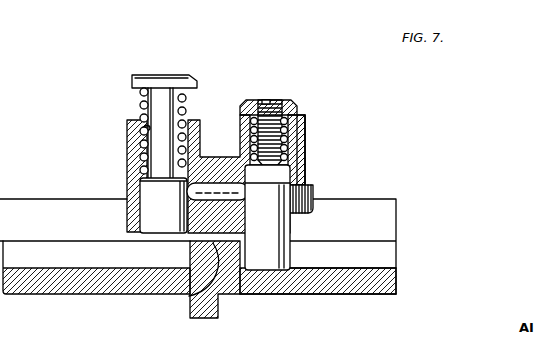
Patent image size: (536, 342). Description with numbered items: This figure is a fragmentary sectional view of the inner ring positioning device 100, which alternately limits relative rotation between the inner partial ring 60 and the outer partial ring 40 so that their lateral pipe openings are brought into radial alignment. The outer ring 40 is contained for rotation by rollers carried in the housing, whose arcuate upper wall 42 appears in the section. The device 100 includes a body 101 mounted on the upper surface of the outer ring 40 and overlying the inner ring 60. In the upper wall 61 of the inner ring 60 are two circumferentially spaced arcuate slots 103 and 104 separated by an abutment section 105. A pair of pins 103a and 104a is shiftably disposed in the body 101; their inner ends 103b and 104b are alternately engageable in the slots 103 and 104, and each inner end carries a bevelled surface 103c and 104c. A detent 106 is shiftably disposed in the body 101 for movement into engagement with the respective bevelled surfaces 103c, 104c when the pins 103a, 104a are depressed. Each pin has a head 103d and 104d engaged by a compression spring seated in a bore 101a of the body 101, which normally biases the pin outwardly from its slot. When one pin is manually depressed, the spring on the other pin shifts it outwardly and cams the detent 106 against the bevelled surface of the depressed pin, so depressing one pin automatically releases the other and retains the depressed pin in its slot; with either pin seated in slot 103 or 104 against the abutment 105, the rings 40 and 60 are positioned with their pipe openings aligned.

The outer partial ring 40 is at (35, 197).
The upper wall 42 is at (376, 200).
The inner partial ring 60 is at (358, 292).
The upper wall 61 is at (384, 281).
The inner ring positioning device 100 is at (309, 151).
The body 101 is at (210, 156).
The bores 101a is at (135, 126).
The arcuate slot 103 is at (381, 266).
The pin 103a is at (258, 246).
The inner end 103b is at (286, 126).
The bevelled surface 103c is at (296, 196).
The head 103d is at (266, 105).
The arcuate slot 104 is at (66, 269).
The pin 104a is at (143, 219).
The inner end 104b is at (140, 106).
The bevelled surface 104c is at (128, 166).
The head 104d is at (145, 75).
The abutment section 105 is at (188, 297).
The detent 106 is at (214, 186).